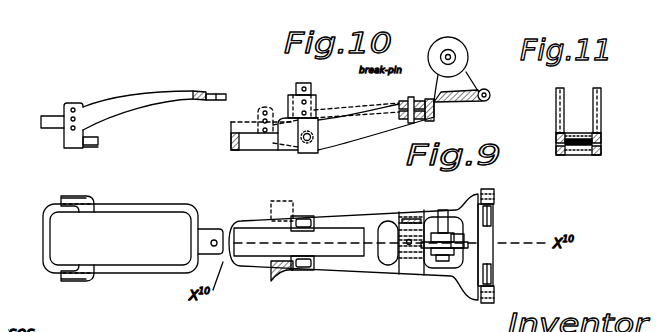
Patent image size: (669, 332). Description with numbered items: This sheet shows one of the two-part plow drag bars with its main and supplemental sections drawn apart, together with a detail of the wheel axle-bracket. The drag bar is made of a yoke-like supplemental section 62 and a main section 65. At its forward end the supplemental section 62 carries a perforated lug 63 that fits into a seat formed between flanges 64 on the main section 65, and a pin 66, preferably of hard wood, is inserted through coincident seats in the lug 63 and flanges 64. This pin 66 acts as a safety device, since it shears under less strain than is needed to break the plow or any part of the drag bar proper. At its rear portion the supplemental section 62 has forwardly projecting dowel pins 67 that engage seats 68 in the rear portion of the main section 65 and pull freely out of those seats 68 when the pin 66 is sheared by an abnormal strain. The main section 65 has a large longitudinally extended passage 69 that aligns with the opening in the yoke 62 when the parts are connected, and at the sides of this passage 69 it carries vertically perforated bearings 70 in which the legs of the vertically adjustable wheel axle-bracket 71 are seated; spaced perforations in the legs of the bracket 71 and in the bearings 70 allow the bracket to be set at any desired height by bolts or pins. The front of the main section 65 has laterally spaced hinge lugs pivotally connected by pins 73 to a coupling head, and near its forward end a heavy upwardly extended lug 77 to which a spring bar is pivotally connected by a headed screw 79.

In FIG. 10, the supplemental section 62 is at (131, 102).
In FIG. 9, the supplemental section 62 is at (125, 273).
In FIG. 10, the perforated lug 63 is at (222, 93).
In FIG. 9, the perforated lug 63 is at (210, 228).
In FIG. 10, the flanges 64 is at (430, 118).
In FIG. 9, the flanges 64 is at (413, 264).
In FIG. 10, the main section 65 is at (355, 134).
In FIG. 9, the main section 65 is at (365, 267).
In FIG. 10, the pin 66 is at (408, 101).
In FIG. 9, the pin 66 is at (406, 238).
In FIG. 10, the dowel pins 67 is at (98, 144).
In FIG. 9, the seats 68 is at (268, 282).
In FIG. 9, the passage 69 is at (253, 247).
In FIG. 10, the bearings 70 is at (290, 100).
In FIG. 9, the bearings 70 is at (300, 216).
In FIG. 10, the wheel axle-bracket 71 is at (315, 89).
In FIG. 11, the wheel axle-bracket 71 is at (600, 125).
In FIG. 9, the pins 73 is at (492, 215).
In FIG. 10, the lugs 77 is at (456, 50).
In FIG. 9, the lugs 77 is at (437, 226).
In FIG. 9, the headed screws 79 is at (442, 262).